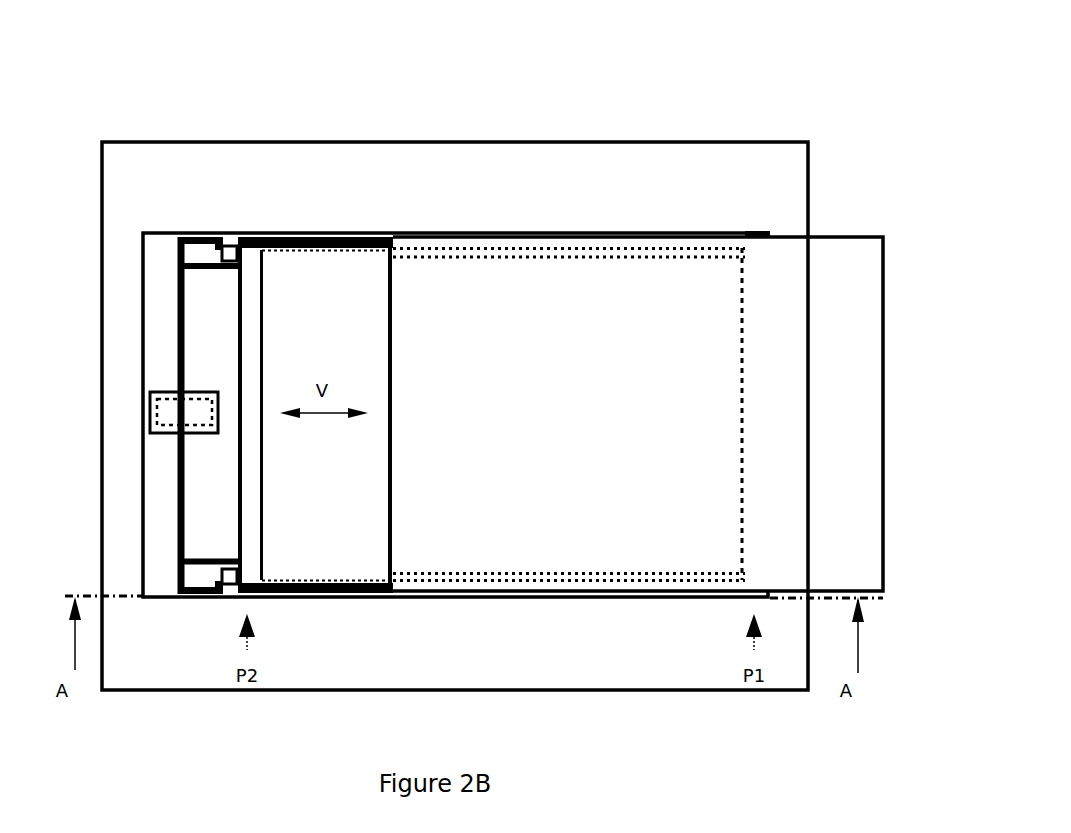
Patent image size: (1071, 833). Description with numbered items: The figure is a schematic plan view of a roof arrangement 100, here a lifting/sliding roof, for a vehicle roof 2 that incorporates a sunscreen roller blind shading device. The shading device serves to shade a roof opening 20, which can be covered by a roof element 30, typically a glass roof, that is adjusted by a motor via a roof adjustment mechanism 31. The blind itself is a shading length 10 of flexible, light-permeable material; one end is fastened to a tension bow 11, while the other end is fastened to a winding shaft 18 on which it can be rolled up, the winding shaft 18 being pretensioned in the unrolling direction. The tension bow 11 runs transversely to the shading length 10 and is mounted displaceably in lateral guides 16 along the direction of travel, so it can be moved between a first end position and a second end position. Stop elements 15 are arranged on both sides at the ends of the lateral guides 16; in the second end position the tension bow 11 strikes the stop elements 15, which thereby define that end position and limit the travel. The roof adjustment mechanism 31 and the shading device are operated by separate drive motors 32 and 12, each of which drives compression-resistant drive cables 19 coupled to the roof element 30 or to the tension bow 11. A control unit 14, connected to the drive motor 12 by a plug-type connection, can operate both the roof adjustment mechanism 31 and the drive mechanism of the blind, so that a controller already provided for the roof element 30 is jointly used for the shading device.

The roof arrangement 100 is at (165, 101).
The vehicle roof 2 is at (792, 152).
The roof opening 20 is at (158, 278).
The drive motor 12 is at (143, 432).
The control unit 14 is at (158, 400).
The drive motor 32 is at (143, 432).
The drive cables 19 is at (197, 233).
The stop elements 15 is at (225, 244).
The tension bow 11 is at (252, 265).
The lateral guides 16 is at (328, 236).
The shading length 10 is at (323, 282).
The roof element 30 is at (812, 252).
The roof adjustment mechanism 31 is at (543, 250).
The winding shaft 18 is at (750, 231).